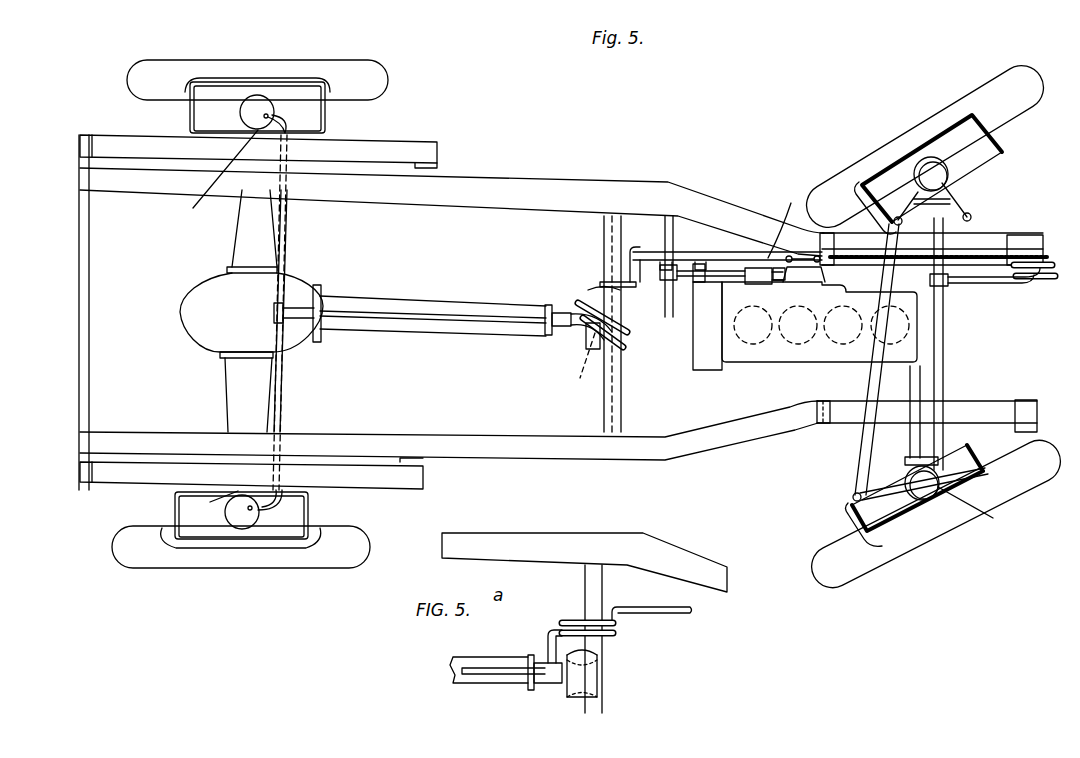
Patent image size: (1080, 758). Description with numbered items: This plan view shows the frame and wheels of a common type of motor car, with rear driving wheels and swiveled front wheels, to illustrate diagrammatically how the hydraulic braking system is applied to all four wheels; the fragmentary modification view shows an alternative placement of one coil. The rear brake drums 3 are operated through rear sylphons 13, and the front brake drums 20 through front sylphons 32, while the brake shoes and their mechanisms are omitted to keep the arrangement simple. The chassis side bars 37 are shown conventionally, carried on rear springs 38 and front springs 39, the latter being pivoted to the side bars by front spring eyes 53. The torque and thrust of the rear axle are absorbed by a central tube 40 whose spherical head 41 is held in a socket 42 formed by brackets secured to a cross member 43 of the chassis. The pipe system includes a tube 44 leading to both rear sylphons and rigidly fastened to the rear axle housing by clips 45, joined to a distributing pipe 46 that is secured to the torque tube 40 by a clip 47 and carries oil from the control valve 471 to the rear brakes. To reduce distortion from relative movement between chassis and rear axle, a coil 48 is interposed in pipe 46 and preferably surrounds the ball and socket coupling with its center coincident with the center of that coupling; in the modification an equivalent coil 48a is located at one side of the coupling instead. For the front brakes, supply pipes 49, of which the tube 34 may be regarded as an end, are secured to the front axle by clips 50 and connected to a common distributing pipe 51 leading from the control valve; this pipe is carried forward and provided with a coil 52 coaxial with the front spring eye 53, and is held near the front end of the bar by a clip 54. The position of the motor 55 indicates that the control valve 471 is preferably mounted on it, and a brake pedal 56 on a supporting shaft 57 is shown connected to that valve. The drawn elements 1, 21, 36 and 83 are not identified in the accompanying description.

In FIG. 5, the differential housing 1 is at (235, 388).
In FIG. 5, the rear brake drum 3 is at (330, 120).
In FIG. 5, the rear sylphon 13 is at (275, 112).
In FIG. 5, the front brake drum 20 is at (1000, 148).
In FIG. 5, the engine 21 is at (918, 376).
In FIG. 5, the front sylphon 32 is at (948, 173).
In FIG. 5, the tube 34 is at (951, 198).
In FIG. 5, the bracket 36 is at (880, 192).
In FIG. 5, the side bar of the chassis 37 is at (492, 205).
In FIG. 5A, the side bar of the chassis 37 is at (618, 545).
In FIG. 5, the rear spring 38 is at (398, 150).
In FIG. 5, the front spring 39 is at (975, 232).
In FIG. 5, the central tube 40 is at (398, 330).
In FIG. 5A, the central tube 40 is at (453, 681).
In FIG. 5, the spherical head 41 is at (587, 340).
In FIG. 5A, the spherical head 41 is at (573, 684).
In FIG. 5, the socket 42 is at (575, 371).
In FIG. 5, the cross member 43 is at (622, 400).
In FIG. 5A, the cross member 43 is at (593, 639).
In FIG. 5, the tube 44 is at (278, 390).
In FIG. 5, the clip 45 is at (491, 325).
In FIG. 5, the distributing pipe 46 is at (471, 315).
In FIG. 5A, the distributing pipe 46 is at (492, 667).
In FIG. 5, the clip 47 is at (548, 335).
In FIG. 5, the coil 48 is at (623, 338).
In FIG. 5A, the coil 48a is at (572, 622).
In FIG. 5, the supply pipe 49 is at (947, 248).
In FIG. 5, the clip 50 is at (925, 250).
In FIG. 5, the distributing pipe 51 is at (870, 263).
In FIG. 5, the coil 52 is at (1040, 282).
In FIG. 5, the front spring eye 53 is at (1030, 235).
In FIG. 5, the clip 54 is at (1010, 254).
In FIG. 5, the motor 55 is at (768, 361).
In FIG. 5, the brake pedal 56 is at (746, 255).
In FIG. 5, the supporting shaft 57 is at (680, 245).
In FIG. 5, the fitting 83 is at (750, 285).
In FIG. 5, the control valve 471 is at (801, 283).